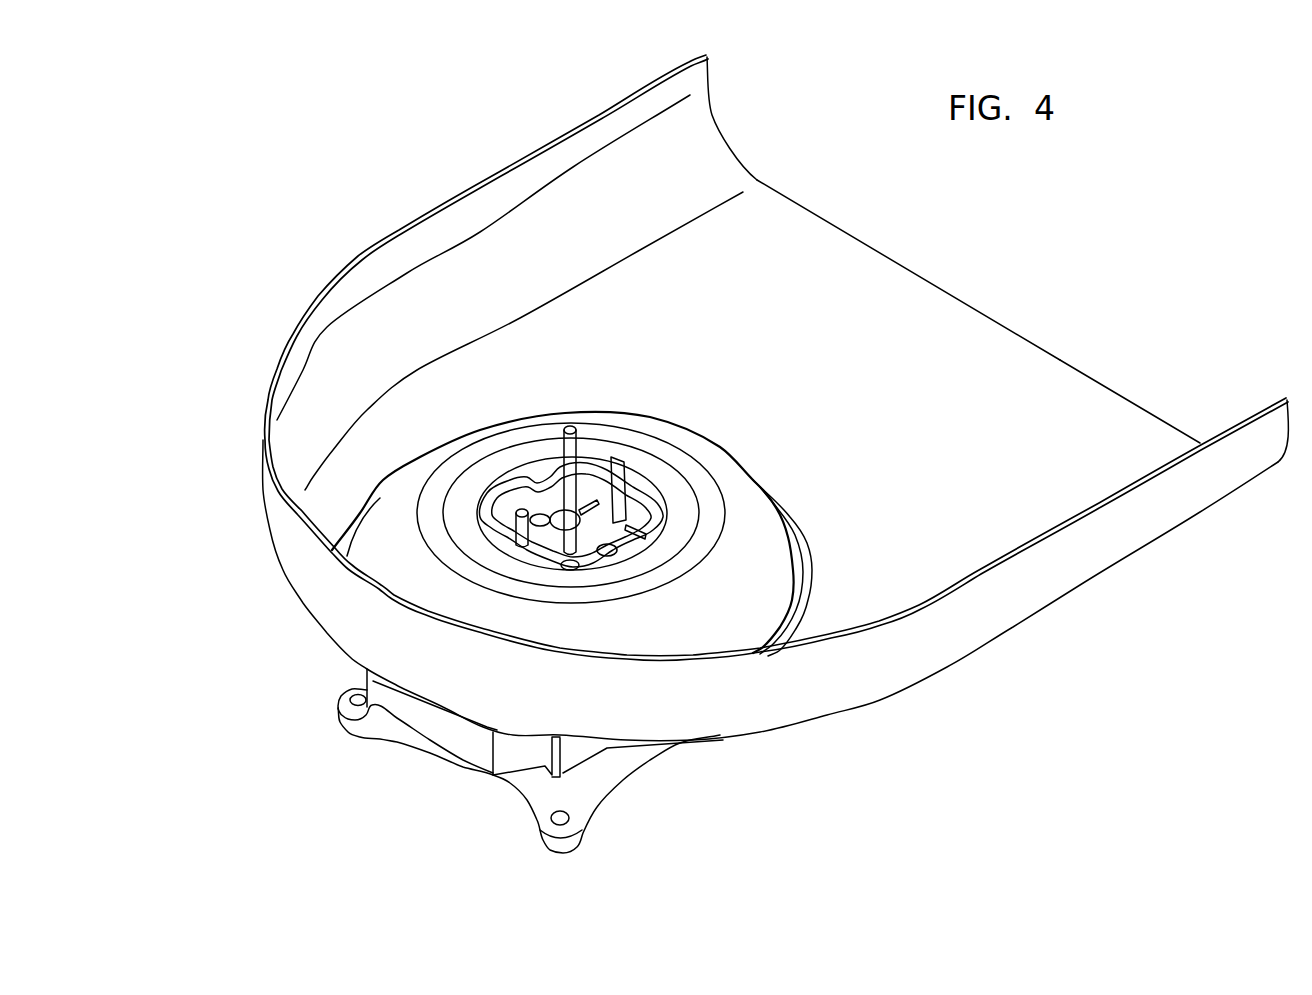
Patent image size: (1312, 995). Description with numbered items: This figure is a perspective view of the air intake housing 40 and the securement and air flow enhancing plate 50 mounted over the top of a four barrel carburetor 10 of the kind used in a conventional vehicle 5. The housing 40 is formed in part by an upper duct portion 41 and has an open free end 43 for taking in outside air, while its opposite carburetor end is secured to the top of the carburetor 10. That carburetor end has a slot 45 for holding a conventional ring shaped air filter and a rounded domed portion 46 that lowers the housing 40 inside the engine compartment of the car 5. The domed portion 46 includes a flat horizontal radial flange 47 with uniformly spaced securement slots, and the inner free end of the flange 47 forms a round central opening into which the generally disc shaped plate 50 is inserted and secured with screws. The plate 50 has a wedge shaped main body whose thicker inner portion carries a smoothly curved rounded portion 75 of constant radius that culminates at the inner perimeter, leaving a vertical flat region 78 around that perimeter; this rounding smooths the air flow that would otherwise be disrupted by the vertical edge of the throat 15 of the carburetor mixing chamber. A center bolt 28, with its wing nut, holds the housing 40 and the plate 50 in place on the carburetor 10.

The vehicle 5 is at (263, 372).
The carburetor 10 is at (345, 664).
The throat 15 is at (500, 512).
The center bolt 28 is at (573, 450).
The air intake housing 40 is at (897, 258).
The upper duct portion 41 is at (963, 323).
The free end 43 is at (1060, 365).
The slot 45 is at (800, 573).
The domed portion 46 is at (757, 530).
The radial flange 47 is at (700, 487).
The securement and air flow enhancing plate 50 is at (647, 470).
The rounded portion 75 is at (530, 473).
The vertical flat region 78 is at (553, 473).